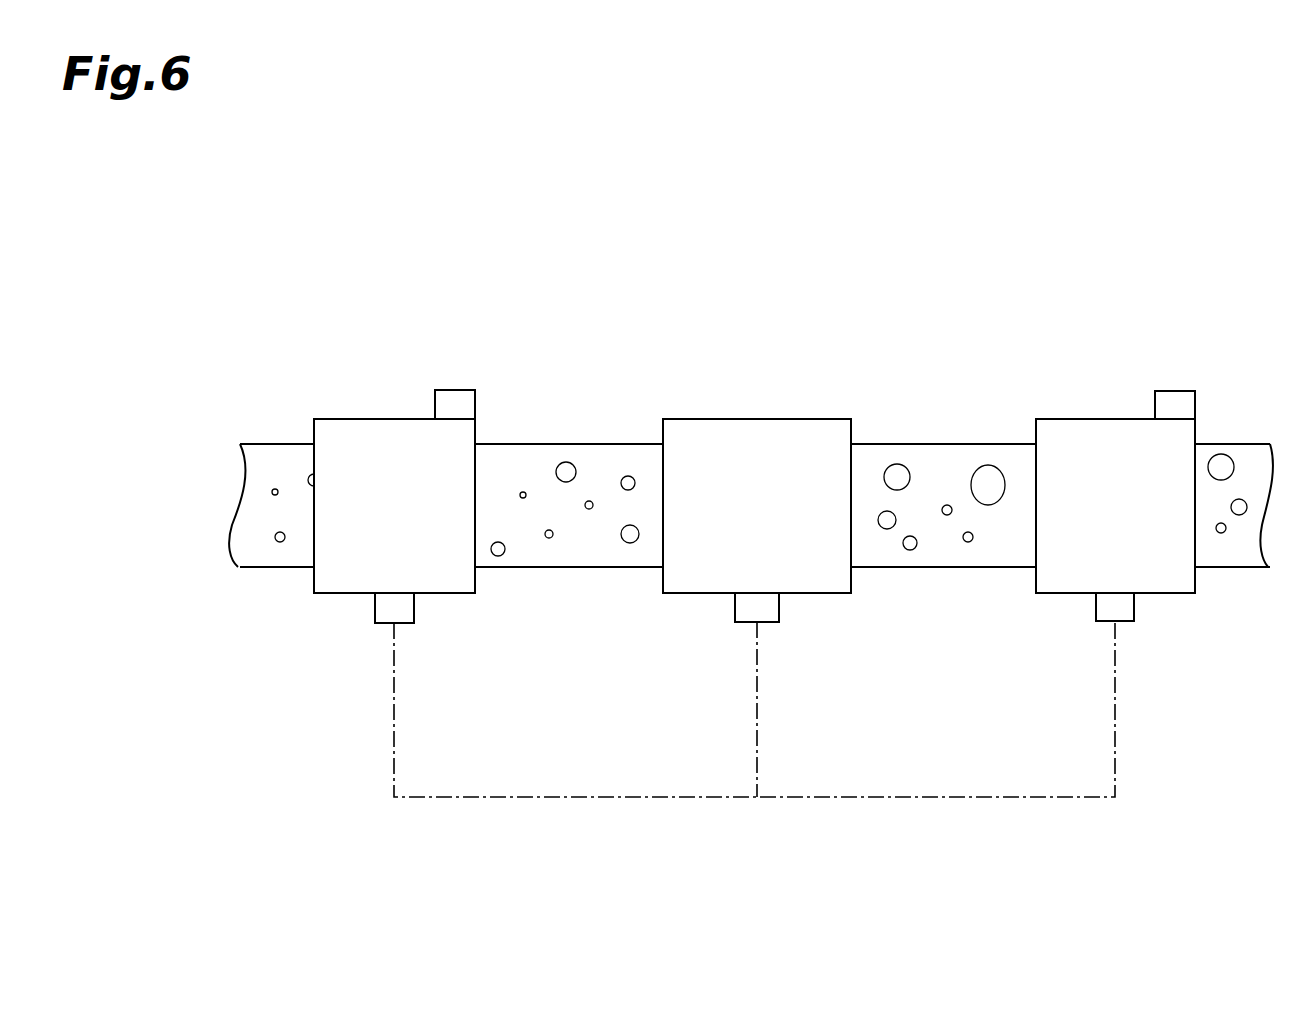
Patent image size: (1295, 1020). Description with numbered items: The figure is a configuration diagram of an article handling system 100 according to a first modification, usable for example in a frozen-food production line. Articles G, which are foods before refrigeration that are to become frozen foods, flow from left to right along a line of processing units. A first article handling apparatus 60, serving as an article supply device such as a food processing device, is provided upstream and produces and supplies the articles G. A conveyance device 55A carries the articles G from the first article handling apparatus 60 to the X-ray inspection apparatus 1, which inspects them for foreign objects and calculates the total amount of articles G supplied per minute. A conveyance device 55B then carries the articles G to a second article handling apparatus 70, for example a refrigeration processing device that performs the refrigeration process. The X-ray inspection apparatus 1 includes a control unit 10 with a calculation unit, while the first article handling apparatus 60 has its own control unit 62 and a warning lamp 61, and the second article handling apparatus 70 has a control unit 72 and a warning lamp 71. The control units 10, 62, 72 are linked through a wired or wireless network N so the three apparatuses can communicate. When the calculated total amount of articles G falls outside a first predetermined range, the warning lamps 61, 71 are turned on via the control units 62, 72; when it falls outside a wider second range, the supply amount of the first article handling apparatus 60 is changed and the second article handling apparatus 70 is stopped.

The article handling system 100 is at (1078, 277).
The X-ray inspection apparatus 1 is at (796, 419).
The control unit 10 is at (770, 611).
The first article handling apparatus 60 is at (347, 419).
The warning lamp 61 is at (454, 390).
The control unit 62 is at (406, 615).
The second article handling apparatus 70 is at (1082, 419).
The warning lamp 71 is at (1175, 391).
The control unit 72 is at (1125, 605).
The conveyance device 55A is at (572, 557).
The conveyance device 55B is at (952, 556).
The articles G is at (523, 492).
The network N is at (558, 799).